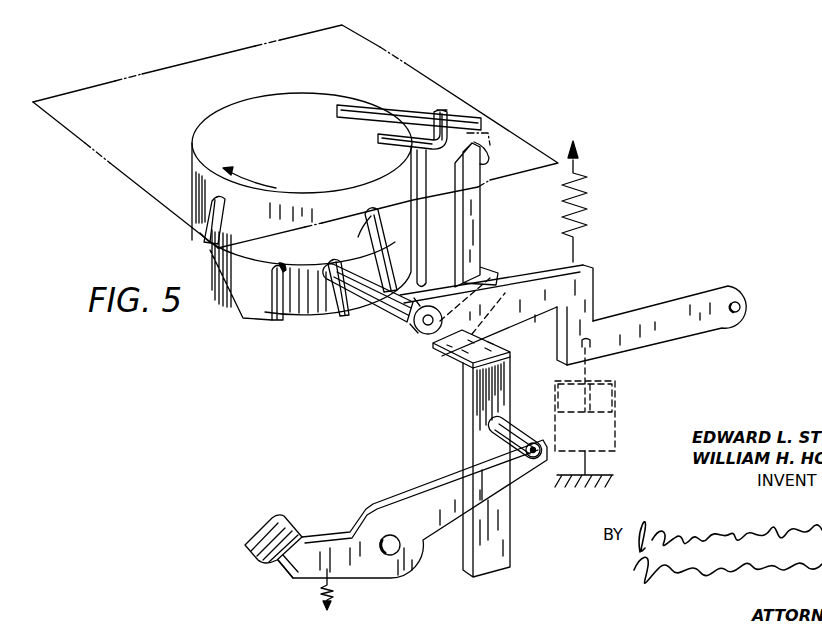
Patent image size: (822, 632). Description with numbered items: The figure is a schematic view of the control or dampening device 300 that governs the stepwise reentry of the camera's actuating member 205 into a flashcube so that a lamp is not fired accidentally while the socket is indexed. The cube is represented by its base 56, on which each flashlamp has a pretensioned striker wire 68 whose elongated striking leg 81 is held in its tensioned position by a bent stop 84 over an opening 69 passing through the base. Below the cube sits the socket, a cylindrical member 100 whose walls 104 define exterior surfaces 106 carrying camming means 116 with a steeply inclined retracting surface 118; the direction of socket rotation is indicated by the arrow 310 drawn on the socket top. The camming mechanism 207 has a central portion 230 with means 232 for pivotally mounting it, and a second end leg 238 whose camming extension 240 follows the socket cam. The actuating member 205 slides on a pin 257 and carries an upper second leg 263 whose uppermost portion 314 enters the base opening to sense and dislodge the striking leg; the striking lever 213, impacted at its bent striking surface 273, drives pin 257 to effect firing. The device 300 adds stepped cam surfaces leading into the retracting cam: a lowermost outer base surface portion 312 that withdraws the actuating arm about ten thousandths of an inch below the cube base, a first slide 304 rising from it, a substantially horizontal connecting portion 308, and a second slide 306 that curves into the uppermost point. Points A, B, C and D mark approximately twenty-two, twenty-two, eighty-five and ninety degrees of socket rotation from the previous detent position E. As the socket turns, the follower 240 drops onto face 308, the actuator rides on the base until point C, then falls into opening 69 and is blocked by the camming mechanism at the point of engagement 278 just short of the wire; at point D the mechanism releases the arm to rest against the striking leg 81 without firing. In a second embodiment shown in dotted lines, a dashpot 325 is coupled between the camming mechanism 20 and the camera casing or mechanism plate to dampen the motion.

The camming mechanism 20 is at (90, 162).
The base 56 is at (388, 43).
The striker wire 68 is at (302, 133).
The opening 69 is at (497, 133).
The striking leg 81 is at (413, 116).
The stop 84 is at (454, 134).
The cylindrical member 100 is at (183, 132).
The walls 104 is at (189, 200).
The exterior surfaces 106 is at (190, 180).
The camming means 116 is at (390, 208).
The inclined surface 118 is at (382, 260).
The actuating member 205 is at (457, 377).
The camming mechanism 207 is at (604, 288).
The striking lever 213 is at (357, 497).
The central portion 230 is at (677, 311).
The pivot mounting means 232 is at (755, 301).
The second end leg 238 is at (530, 275).
The camming extension 240 is at (392, 303).
The pin 257 is at (512, 435).
The second leg 263 is at (478, 190).
The striking surface 273 is at (262, 528).
The point of engagement 278 is at (486, 337).
The control device 300 is at (308, 327).
The first slide 304 is at (276, 292).
The second slide 306 is at (362, 232).
The connecting portion 308 is at (302, 270).
The rotation arrow 310 is at (270, 186).
The outer base surface portion 312 is at (259, 321).
The uppermost portion 314 is at (489, 156).
The dashpot 325 is at (626, 406).
The point A is at (283, 322).
The point B is at (262, 258).
The point C is at (332, 262).
The point D is at (362, 206).
The detent position E is at (218, 196).